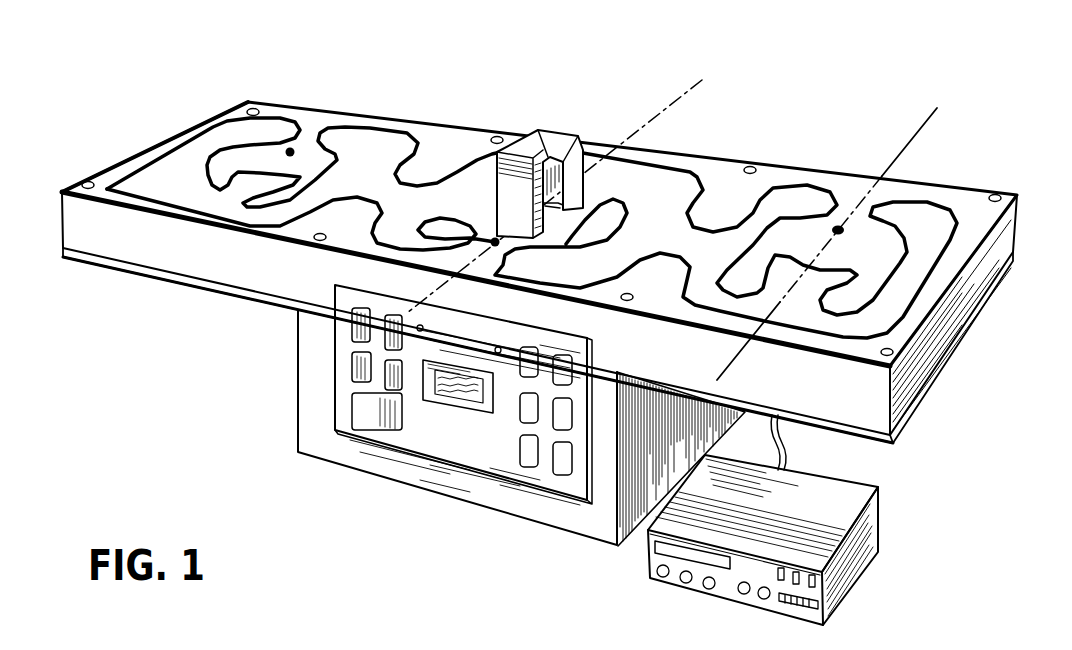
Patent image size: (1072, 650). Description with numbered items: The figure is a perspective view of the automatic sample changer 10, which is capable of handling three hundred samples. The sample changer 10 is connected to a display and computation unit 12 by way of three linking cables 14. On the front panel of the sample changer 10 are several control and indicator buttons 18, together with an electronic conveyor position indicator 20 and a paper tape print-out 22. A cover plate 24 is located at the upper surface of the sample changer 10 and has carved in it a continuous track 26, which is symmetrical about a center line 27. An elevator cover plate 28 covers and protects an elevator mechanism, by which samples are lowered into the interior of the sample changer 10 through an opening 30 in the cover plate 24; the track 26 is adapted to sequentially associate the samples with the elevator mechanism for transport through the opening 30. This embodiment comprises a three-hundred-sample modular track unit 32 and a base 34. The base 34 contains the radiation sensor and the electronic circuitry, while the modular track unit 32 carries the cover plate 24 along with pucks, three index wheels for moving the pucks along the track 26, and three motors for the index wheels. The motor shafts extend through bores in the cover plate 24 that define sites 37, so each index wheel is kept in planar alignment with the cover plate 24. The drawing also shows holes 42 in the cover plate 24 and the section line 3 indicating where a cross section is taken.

The automatic sample changer 10 is at (785, 85).
The display and computation unit 12 is at (930, 470).
The linking cables 14 is at (788, 449).
The control and indicator buttons 18 is at (343, 305).
The electronic conveyor position indicator 20 is at (375, 420).
The paper tape print-out 22 is at (455, 415).
The cover plate 24 is at (917, 312).
The continuous track 26 is at (657, 175).
The center line 27 is at (682, 98).
The elevator cover plate 28 is at (548, 135).
The opening 30 is at (556, 210).
The modular track unit 32 is at (155, 292).
The base 34 is at (284, 380).
The sites 37 is at (292, 148).
The mounting holes 42 is at (86, 182).
The section line 3- 3 is at (860, 110).